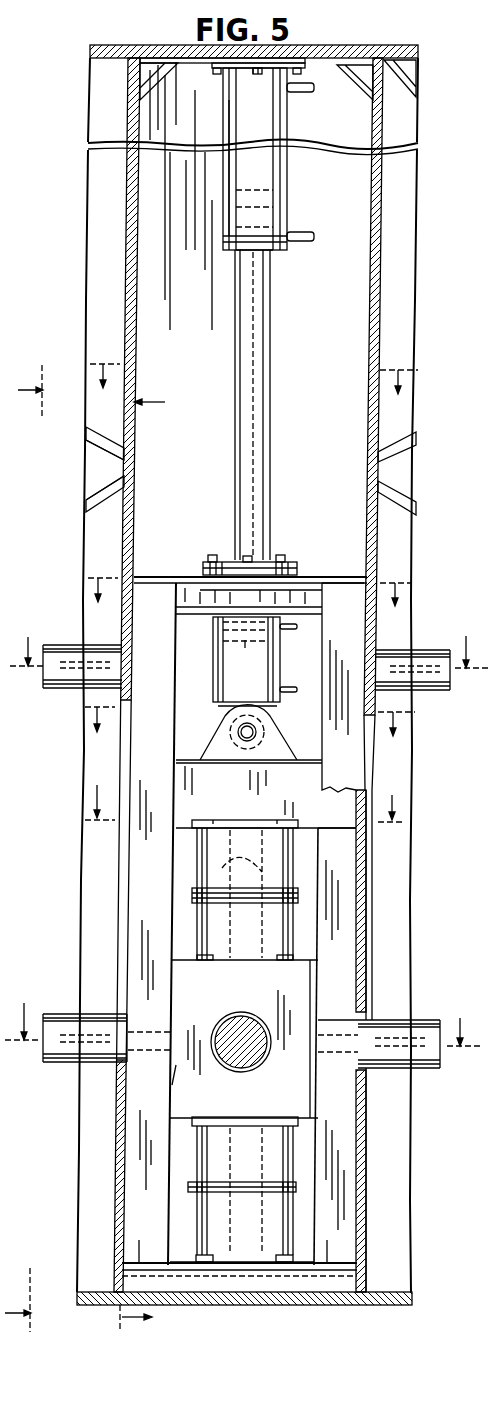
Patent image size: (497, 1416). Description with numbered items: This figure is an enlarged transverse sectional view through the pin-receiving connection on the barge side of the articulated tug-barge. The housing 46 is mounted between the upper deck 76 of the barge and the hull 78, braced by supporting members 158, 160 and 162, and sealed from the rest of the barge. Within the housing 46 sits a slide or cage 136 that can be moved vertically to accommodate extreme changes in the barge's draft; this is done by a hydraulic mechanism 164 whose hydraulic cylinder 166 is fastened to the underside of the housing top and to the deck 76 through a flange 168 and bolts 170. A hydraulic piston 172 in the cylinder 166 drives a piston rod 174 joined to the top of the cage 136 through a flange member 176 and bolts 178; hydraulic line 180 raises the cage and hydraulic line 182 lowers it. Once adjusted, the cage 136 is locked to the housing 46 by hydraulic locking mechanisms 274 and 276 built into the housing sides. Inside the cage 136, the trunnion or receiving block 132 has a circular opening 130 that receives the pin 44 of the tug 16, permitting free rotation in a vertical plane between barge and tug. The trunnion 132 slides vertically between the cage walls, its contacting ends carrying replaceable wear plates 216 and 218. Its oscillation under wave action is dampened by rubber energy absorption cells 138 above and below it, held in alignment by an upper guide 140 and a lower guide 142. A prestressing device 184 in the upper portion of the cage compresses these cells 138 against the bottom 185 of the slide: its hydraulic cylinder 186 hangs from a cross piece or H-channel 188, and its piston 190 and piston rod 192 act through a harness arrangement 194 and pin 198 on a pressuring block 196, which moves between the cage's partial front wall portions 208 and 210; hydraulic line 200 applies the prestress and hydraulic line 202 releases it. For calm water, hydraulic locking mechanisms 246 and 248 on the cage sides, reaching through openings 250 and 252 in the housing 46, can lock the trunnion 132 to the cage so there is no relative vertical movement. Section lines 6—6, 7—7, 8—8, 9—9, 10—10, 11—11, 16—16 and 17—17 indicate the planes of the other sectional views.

The section line 6- 6 is at (254, 389).
The section line 7- 7 is at (250, 606).
The section line 8- 8 is at (250, 734).
The section line 9- 9 is at (245, 803).
The section line 10- 10 is at (250, 641).
The section line 11- 11 is at (244, 1015).
The tug 16 is at (153, 863).
The section line 17- 17 is at (24, 848).
The pin 44 is at (250, 1060).
The housing 46 is at (128, 117).
The upper deck 76 is at (150, 45).
The hull 78 is at (332, 1305).
The circular opening 130 is at (232, 1052).
The trunnion or receiving block 132 is at (231, 1003).
The slide or cage 136 is at (158, 577).
The rubber energy absorption cells 138 is at (200, 918).
The guide 140 is at (245, 850).
The guide 142 is at (245, 1228).
The supporting and bracing member 158 is at (348, 1283).
The supporting and bracing member 160 is at (100, 494).
The supporting and bracing member 162 is at (398, 65).
The hydraulic mechanism 164 is at (218, 239).
The hydraulic cylinder 166 is at (225, 198).
The flange 168 is at (213, 74).
The bolts 170 is at (258, 77).
The hydraulic piston 172 is at (268, 207).
The piston rod 174 is at (262, 362).
The flange member 176 is at (296, 568).
The bolts 178 is at (247, 556).
The hydraulic line 180 is at (302, 242).
The hydraulic line 182 is at (308, 93).
The prestressing or dampening device 184 is at (208, 710).
The bottom of the slide 185 is at (325, 1265).
The hydraulic cylinder 186 is at (212, 673).
The cross piece or H-channel 188 is at (205, 612).
The piston 190 is at (243, 641).
The piston rod 192 is at (262, 705).
The harness arrangement 194 is at (218, 742).
The pressuring block 196 is at (239, 803).
The pin 198 is at (252, 745).
The hydraulic line 200 is at (292, 629).
The hydraulic line 202 is at (300, 682).
The partial front wall portion 208 is at (145, 930).
The partial front wall portion 210 is at (345, 1135).
The wear plate 216 is at (182, 1065).
The wear plate 218 is at (335, 968).
The hydraulic locking mechanism 246 is at (60, 1053).
The hydraulic locking mechanism 248 is at (425, 1060).
The opening 250 is at (122, 880).
The opening 252 is at (365, 940).
The hydraulic locking mechanism 274 is at (65, 678).
The hydraulic locking mechanism 276 is at (440, 682).